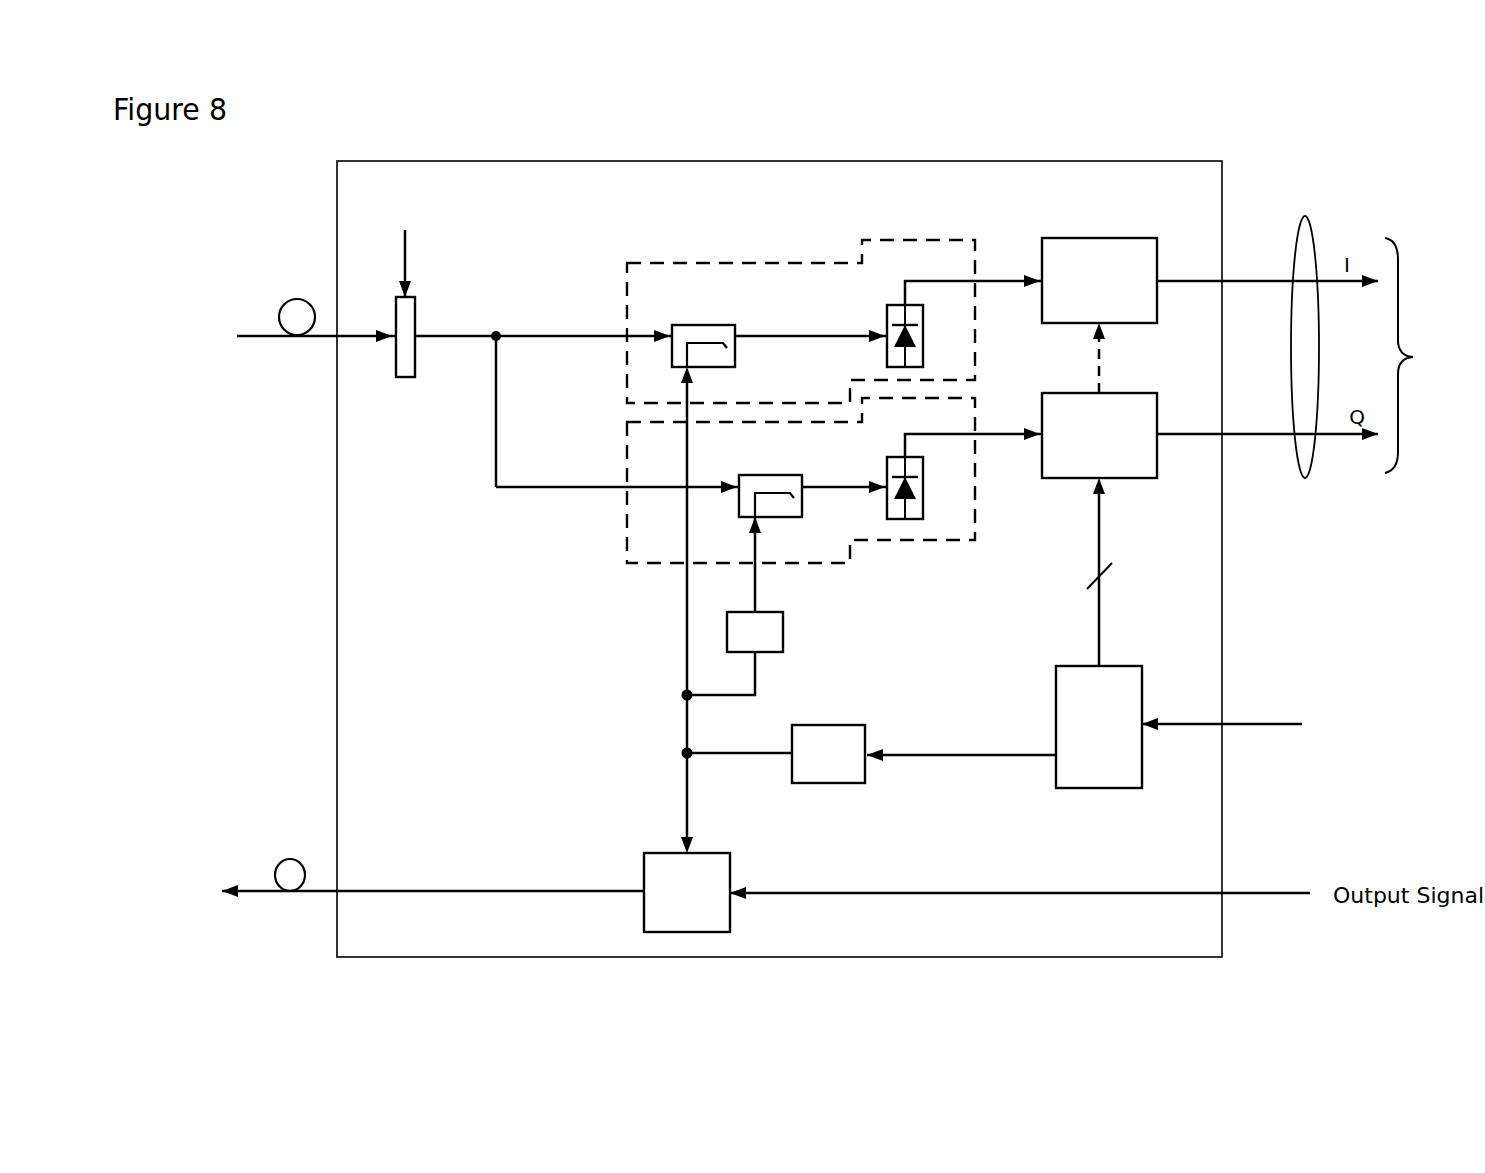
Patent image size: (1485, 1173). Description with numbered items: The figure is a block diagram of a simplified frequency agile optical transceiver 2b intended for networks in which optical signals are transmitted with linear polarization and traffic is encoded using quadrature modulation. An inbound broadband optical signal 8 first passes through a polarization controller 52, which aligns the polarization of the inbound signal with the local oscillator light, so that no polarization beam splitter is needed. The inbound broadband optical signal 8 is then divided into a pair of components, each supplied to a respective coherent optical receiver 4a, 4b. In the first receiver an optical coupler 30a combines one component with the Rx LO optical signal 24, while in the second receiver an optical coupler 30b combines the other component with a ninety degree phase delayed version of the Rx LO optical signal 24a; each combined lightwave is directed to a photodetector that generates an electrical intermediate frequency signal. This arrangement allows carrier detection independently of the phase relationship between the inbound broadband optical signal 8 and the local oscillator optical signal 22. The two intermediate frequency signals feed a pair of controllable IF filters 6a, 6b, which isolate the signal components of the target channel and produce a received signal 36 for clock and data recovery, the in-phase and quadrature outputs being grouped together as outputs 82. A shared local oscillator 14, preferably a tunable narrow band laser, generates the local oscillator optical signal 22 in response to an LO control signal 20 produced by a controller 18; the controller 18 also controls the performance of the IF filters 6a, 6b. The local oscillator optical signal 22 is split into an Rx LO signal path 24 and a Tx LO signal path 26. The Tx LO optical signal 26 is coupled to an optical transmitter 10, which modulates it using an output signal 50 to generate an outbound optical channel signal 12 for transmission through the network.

The simplified transceiver 2b is at (318, 212).
The inbound broadband optical signal 8 is at (306, 338).
The polarization controller 52 is at (405, 378).
The optical receiver 4a is at (800, 321).
The optical receiver 4b is at (800, 480).
The optical coupler 30a is at (697, 325).
The optical coupler 30b is at (766, 475).
The IF filter 6a is at (1130, 238).
The IF filter 6b is at (1135, 393).
The received signal 36 is at (1306, 228).
The I/Q outputs 82 is at (1416, 355).
The phase delayed Rx LO optical signal 24a is at (757, 591).
The Rx LO optical signal 24 is at (686, 729).
The local oscillator optical signal 22 is at (718, 756).
The Tx LO optical signal 26 is at (686, 796).
The local oscillator 14 is at (856, 725).
The optical transmitter 10 is at (731, 871).
The outbound optical channel signal 12 is at (450, 890).
The output signal 50 is at (1012, 893).
The controller 18 is at (1125, 666).
The LO control signal 20 is at (943, 757).